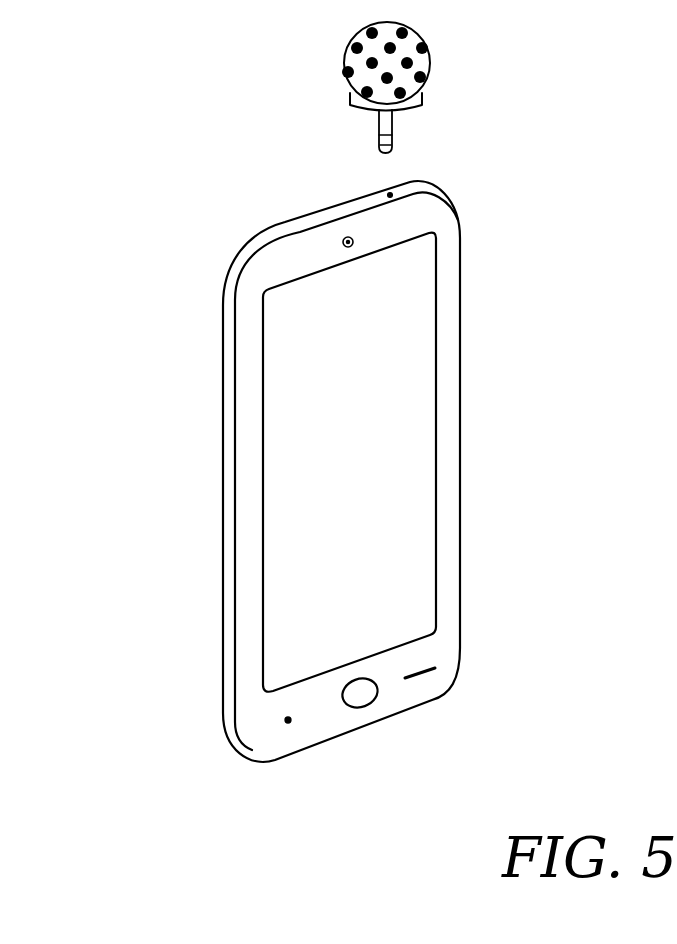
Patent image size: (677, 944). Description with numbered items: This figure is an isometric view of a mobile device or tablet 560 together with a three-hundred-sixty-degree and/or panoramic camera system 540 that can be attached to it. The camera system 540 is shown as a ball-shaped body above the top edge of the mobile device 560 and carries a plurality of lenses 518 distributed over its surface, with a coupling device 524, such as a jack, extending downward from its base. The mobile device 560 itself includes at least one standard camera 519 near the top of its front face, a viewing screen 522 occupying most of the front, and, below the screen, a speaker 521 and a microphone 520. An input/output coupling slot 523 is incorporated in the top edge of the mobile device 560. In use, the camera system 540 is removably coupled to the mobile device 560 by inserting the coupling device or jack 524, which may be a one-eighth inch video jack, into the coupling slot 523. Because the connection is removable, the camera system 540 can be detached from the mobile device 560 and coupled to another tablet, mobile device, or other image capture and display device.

The lenses 518 is at (370, 63).
The standard camera 519 is at (344, 241).
The microphone 520 is at (288, 723).
The speaker 521 is at (430, 670).
The viewing screen 522 is at (290, 485).
The input/output coupling slot 523 is at (391, 193).
The coupling device 524 is at (393, 127).
The camera system 540 is at (398, 87).
The mobile device 560 is at (330, 489).